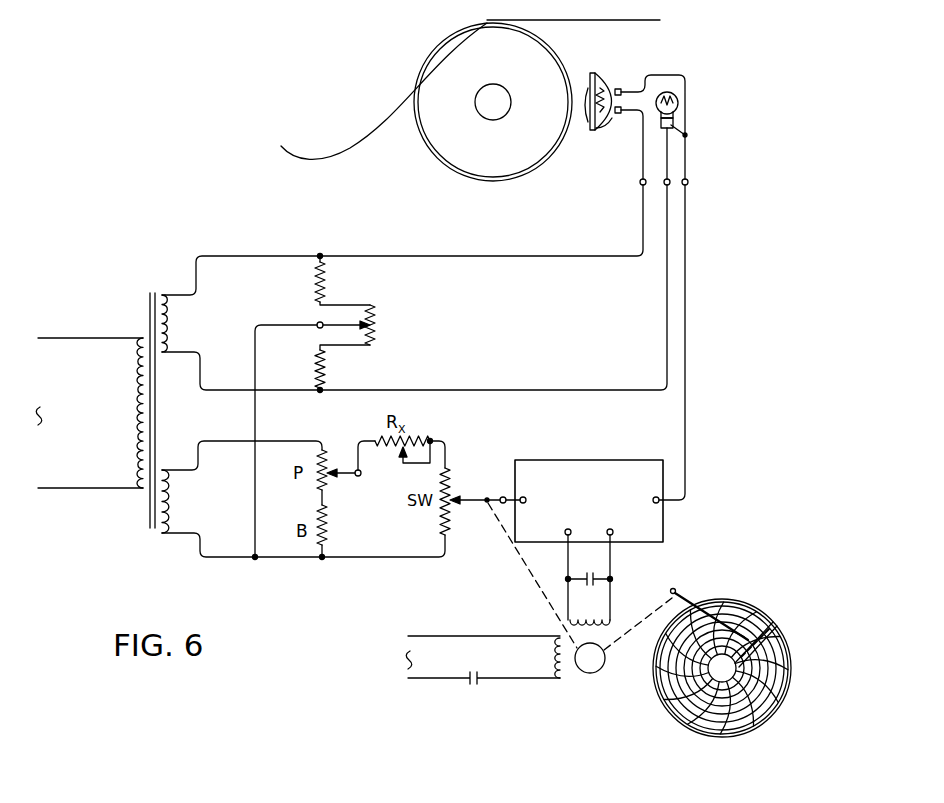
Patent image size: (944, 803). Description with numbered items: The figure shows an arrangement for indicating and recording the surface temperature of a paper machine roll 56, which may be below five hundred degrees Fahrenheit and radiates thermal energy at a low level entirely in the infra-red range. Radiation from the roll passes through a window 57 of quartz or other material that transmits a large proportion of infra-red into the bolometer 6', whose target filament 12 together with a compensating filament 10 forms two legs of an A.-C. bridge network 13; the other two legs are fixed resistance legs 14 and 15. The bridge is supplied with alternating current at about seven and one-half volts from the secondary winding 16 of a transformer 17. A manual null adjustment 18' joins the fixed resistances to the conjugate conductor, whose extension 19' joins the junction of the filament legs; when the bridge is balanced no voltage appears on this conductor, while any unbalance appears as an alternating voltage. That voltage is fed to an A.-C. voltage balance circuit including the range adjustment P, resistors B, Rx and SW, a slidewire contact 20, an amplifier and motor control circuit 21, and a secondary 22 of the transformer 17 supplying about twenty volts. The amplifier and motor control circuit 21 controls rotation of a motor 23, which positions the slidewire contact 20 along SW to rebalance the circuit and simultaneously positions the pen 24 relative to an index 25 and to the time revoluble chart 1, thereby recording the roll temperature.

The paper machine roll 56 is at (504, 157).
The window 57 is at (584, 123).
The target filament 12 is at (600, 90).
The bolometer 6' is at (612, 131).
The compensating filament 10 is at (678, 100).
The A.-C. bridge network 13 is at (538, 347).
The fixed resistance leg 14 is at (326, 284).
The manual null adjustment 18' is at (342, 429).
The fixed resistance leg 15 is at (326, 373).
The transformer 17 is at (138, 321).
The secondary winding 16 is at (174, 330).
The secondary 22 is at (175, 503).
The conjugate conductor extension 19' is at (665, 342).
The slidewire contact 20 is at (487, 498).
The amplifier and motor control circuit 21 is at (597, 522).
The motor 23 is at (612, 701).
The chart 1 is at (736, 601).
The pen 24 is at (690, 596).
The index 25 is at (760, 628).